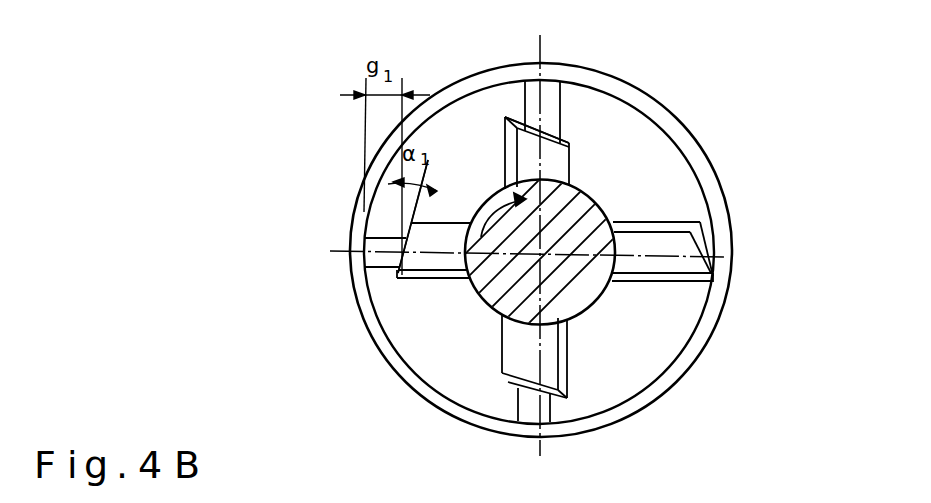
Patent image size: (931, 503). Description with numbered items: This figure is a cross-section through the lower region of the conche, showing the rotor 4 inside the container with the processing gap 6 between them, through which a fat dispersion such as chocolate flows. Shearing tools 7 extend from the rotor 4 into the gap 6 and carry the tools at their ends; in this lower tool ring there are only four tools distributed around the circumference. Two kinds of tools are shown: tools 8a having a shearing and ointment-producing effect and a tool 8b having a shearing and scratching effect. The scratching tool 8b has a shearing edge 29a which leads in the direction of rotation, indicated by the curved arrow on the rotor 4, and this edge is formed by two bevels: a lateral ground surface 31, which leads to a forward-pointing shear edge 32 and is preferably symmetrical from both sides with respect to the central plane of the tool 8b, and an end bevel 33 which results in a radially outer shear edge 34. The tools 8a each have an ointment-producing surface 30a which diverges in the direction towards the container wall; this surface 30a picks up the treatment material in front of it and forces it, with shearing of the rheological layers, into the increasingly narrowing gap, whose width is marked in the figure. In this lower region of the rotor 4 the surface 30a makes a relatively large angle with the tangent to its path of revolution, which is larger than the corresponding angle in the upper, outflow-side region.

The rotor 4 is at (584, 290).
The processing gap 6 is at (596, 376).
The shearing tools 7 is at (560, 99).
The shearing and ointment-producing tools 8a is at (560, 157).
The shearing and scratching tools 8b is at (643, 237).
The shearing edge 29a is at (702, 290).
The ointment-producing surface 30a is at (521, 116).
The lateral ground surface 31 is at (678, 281).
The forward-pointing shear edge 32 is at (640, 284).
The end bevel 33 is at (702, 227).
The radially outer shear edge 34 is at (708, 246).